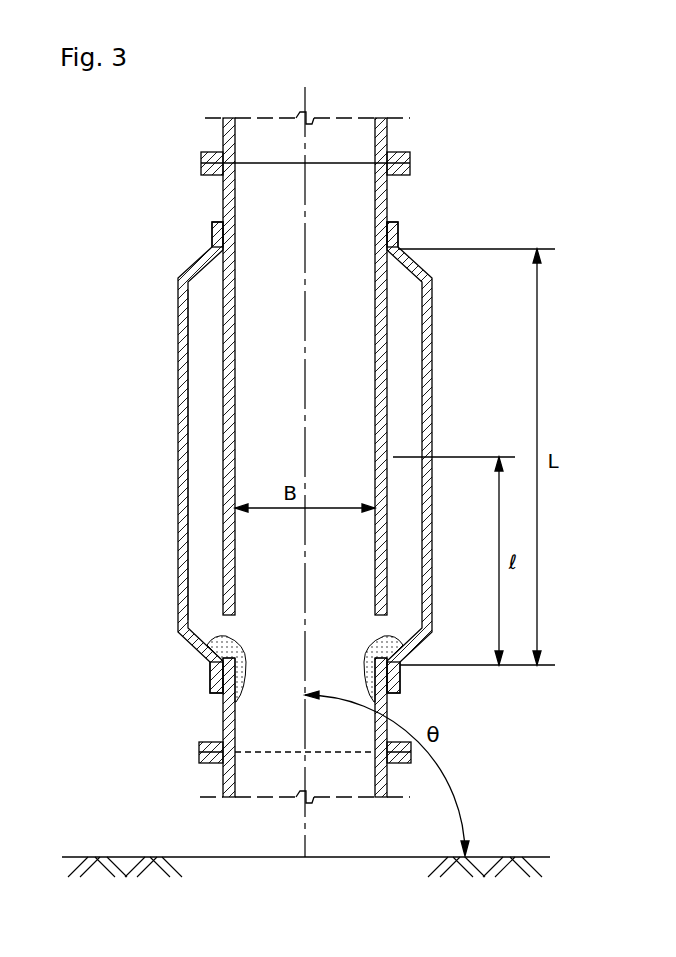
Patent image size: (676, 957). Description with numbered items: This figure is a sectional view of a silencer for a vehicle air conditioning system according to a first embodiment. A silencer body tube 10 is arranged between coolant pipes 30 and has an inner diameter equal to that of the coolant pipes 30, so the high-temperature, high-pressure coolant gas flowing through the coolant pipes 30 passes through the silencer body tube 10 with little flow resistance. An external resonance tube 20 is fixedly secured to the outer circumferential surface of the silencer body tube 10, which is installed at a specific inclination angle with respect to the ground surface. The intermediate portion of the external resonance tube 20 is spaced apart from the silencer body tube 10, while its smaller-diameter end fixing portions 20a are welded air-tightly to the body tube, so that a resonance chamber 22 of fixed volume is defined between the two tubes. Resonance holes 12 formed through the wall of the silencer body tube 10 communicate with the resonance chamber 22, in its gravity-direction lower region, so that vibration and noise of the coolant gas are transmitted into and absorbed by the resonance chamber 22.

The silencer body tube 10 is at (228, 327).
The resonance holes 12 is at (227, 632).
The external resonance tube 20 is at (180, 447).
The end fixing portions 20a is at (398, 236).
The resonance chamber 22 is at (210, 560).
The coolant pipes 30 is at (222, 134).